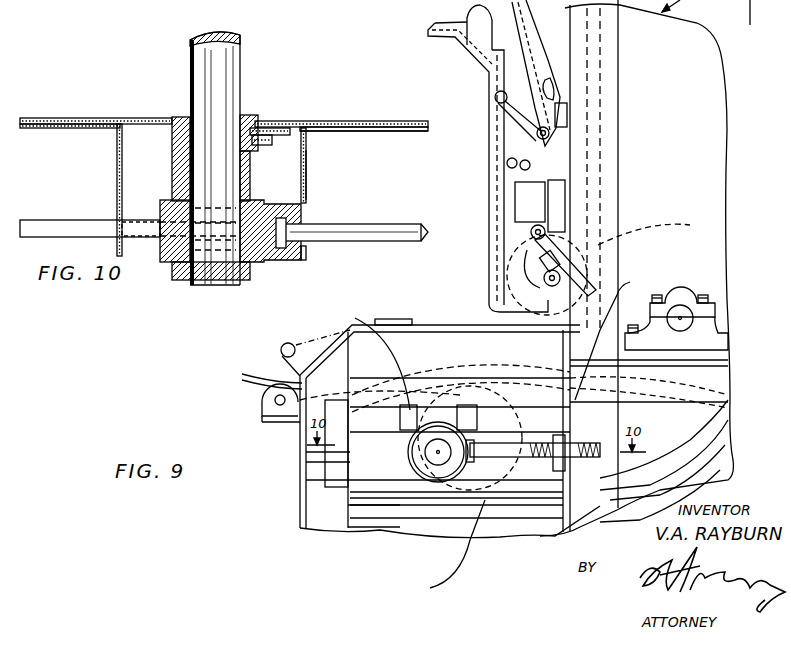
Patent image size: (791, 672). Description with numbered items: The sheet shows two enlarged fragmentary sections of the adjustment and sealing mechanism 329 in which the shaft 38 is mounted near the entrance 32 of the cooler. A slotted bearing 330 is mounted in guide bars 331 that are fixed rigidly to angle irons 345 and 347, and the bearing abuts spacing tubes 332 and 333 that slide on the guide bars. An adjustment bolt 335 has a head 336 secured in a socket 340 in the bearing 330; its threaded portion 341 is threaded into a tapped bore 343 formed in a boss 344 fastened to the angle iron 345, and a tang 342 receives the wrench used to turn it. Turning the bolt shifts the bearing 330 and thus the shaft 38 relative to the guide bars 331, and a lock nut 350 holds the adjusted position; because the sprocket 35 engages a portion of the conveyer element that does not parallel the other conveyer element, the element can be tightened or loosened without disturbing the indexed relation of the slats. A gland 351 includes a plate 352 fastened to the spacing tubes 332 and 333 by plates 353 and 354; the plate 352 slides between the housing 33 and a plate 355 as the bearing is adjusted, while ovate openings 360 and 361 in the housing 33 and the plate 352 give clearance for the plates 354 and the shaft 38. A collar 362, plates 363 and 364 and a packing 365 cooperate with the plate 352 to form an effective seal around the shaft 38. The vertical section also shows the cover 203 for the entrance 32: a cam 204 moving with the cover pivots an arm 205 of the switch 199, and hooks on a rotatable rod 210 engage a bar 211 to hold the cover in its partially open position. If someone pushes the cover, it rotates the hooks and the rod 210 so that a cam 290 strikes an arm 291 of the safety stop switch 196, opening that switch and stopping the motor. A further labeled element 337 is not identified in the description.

In FIG. 10, the shaft 38 is at (241, 58).
In FIG. 9, the shaft 38 is at (305, 478).
In FIG. 10, the plate 355 is at (25, 118).
In FIG. 10, the ovate opening 361 is at (132, 118).
In FIG. 10, the ovate opening 360 is at (47, 128).
In FIG. 9, the ovate opening 360 is at (305, 450).
In FIG. 10, the plate 364 is at (305, 121).
In FIG. 10, the plate 352 is at (382, 126).
In FIG. 9, the plate 352 is at (305, 462).
In FIG. 10, the housing 33 is at (413, 130).
In FIG. 9, the housing 33 is at (452, 331).
In FIG. 10, the collar 362 is at (247, 114).
In FIG. 10, the packing 365 is at (256, 127).
In FIG. 10, the plate 363 is at (272, 140).
In FIG. 10, the plate 353 is at (117, 158).
In FIG. 10, the plate 354 is at (307, 152).
In FIG. 10, the adjustment and sealing mechanism 329 is at (310, 172).
In FIG. 9, the adjustment and sealing mechanism 329 is at (335, 511).
In FIG. 10, the gland 351 is at (170, 158).
In FIG. 10, the socket 340 is at (302, 208).
In FIG. 10, the slotted bearing 330 is at (260, 265).
In FIG. 9, the slotted bearing 330 is at (370, 540).
In FIG. 10, the guide bars 331 is at (75, 226).
In FIG. 9, the guide bars 331 is at (563, 437).
In FIG. 10, the spacing tubes 332 is at (138, 238).
In FIG. 9, the spacing tubes 332 is at (345, 527).
In FIG. 10, the adjustment bolt 335 is at (368, 228).
In FIG. 9, the adjustment bolt 335 is at (500, 500).
In FIG. 10, the head 336 is at (308, 252).
In FIG. 9, the head 336 is at (470, 410).
In FIG. 9, the rotatable rod 210 is at (618, 125).
In FIG. 9, the bar 211 is at (503, 125).
In FIG. 9, the cam 290 is at (585, 150).
In FIG. 9, the arm 291 is at (530, 152).
In FIG. 9, the safety stop switch 196 is at (520, 190).
In FIG. 9, the switch 199 is at (514, 232).
In FIG. 9, the arm 205 is at (527, 250).
In FIG. 9, the cam 204 is at (600, 236).
In FIG. 9, the angle iron 347 is at (320, 332).
In FIG. 9, the cover 203 is at (326, 306).
In FIG. 9, the spacing tubes 333 is at (465, 325).
In FIG. 9, the entrance 32 is at (296, 373).
In FIG. 9, the tapped bore 343 is at (565, 450).
In FIG. 9, the angle iron 345 is at (640, 405).
In FIG. 9, the tang 342 is at (730, 402).
In FIG. 9, the threaded portion 341 is at (728, 425).
In FIG. 9, the lock nut 350 is at (726, 448).
In FIG. 9, the boss 344 is at (722, 476).
In FIG. 9, the sprocket 35 is at (350, 540).
In FIG. 9, the link 337 is at (460, 505).